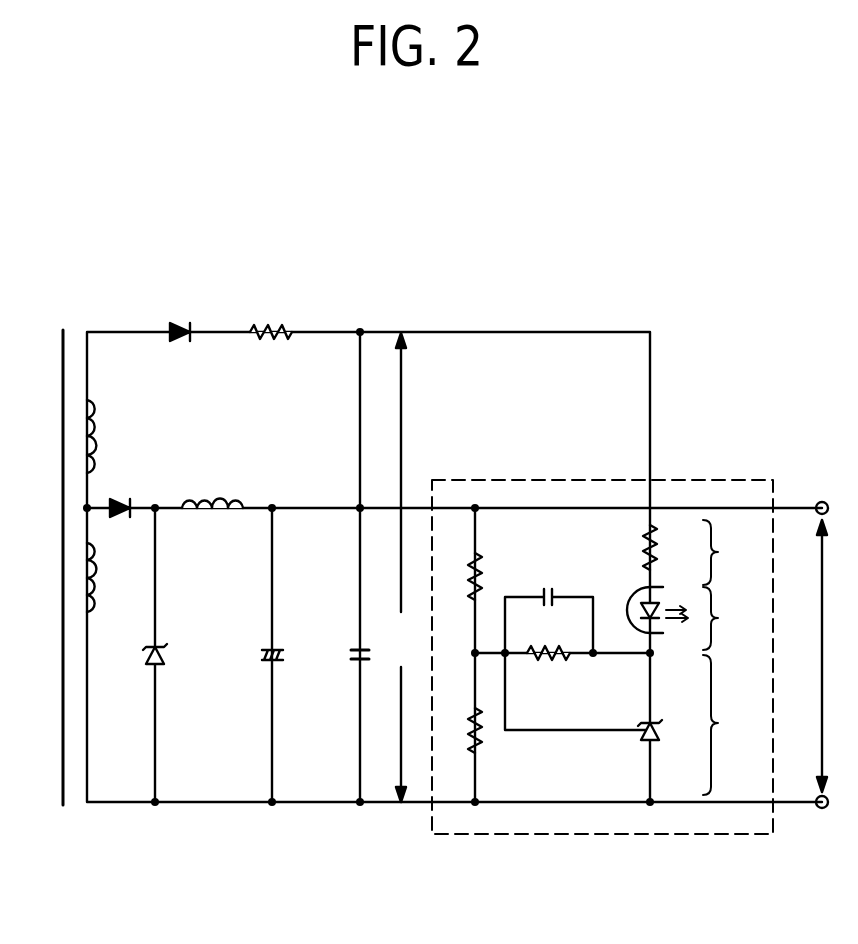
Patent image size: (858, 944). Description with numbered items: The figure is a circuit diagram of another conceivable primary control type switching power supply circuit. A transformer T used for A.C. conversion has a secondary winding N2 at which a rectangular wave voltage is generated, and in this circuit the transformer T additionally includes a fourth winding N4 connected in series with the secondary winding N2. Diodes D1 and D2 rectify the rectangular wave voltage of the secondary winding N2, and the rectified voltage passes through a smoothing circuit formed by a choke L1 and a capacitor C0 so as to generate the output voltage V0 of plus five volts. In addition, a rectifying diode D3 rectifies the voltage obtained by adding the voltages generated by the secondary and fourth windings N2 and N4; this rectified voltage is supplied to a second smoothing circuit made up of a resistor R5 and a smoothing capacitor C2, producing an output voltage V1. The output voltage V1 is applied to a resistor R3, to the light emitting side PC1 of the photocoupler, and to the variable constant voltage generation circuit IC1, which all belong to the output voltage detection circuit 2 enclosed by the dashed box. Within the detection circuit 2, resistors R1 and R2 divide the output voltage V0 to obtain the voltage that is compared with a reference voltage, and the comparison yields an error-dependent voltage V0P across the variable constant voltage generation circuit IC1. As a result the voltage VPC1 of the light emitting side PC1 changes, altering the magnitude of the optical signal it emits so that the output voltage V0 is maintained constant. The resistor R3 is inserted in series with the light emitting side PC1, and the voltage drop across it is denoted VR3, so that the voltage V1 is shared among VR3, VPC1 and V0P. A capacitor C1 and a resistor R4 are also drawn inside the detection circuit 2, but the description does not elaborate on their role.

The output voltage detection circuit 2 is at (545, 836).
The transformer T is at (55, 548).
The fourth winding N4 is at (116, 436).
The secondary winding N2 is at (116, 577).
The diode D1 is at (131, 490).
The diode D2 is at (132, 656).
The rectifying diode D3 is at (182, 316).
The choke L1 is at (212, 486).
The capacitor C0 is at (245, 656).
The capacitor C1 is at (577, 643).
The smoothing capacitor C2 is at (339, 651).
The resistor R1 is at (459, 576).
The resistor R2 is at (459, 730).
The resistor R3 is at (670, 549).
The resistor R4 is at (562, 638).
The resistor R5 is at (267, 315).
The light emitting side of the photocoupler PC1 is at (667, 629).
The variable constant voltage generation circuit IC1 is at (674, 743).
The output voltage V1 is at (405, 567).
The output voltage V0 is at (824, 656).
The voltage drop across resistor R3 VR3 is at (736, 552).
The voltage of the light emitting side PC1 VPC1 is at (742, 618).
The output voltage of the operational amplifier V0P is at (735, 725).